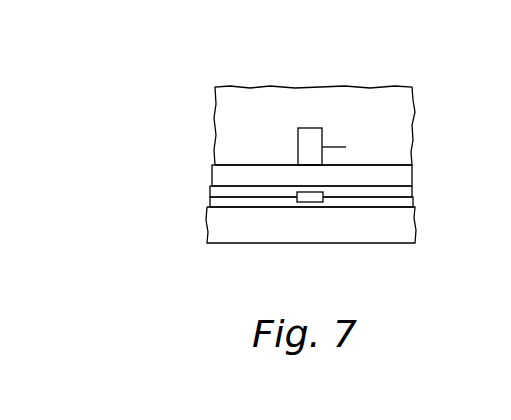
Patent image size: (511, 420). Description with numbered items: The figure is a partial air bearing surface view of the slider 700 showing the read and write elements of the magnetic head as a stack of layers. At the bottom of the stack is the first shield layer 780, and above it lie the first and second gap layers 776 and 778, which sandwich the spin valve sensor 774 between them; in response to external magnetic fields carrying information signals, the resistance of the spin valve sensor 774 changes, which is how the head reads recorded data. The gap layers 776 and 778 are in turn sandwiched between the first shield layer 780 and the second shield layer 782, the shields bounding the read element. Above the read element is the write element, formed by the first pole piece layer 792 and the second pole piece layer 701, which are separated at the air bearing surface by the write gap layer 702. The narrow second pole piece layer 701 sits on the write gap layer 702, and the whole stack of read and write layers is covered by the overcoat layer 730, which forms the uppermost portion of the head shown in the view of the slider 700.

The slider 700 is at (436, 99).
The second pole piece layer 701 is at (318, 134).
The write gap layer 702 is at (298, 161).
The overcoat layer 730 is at (214, 120).
The spin valve sensor 774 is at (310, 202).
The first gap layer 776 is at (240, 208).
The second gap layer 778 is at (393, 192).
The first shield layer 780 is at (410, 227).
The second shield layer 782 is at (214, 177).
The first pole piece layer 792 is at (311, 202).